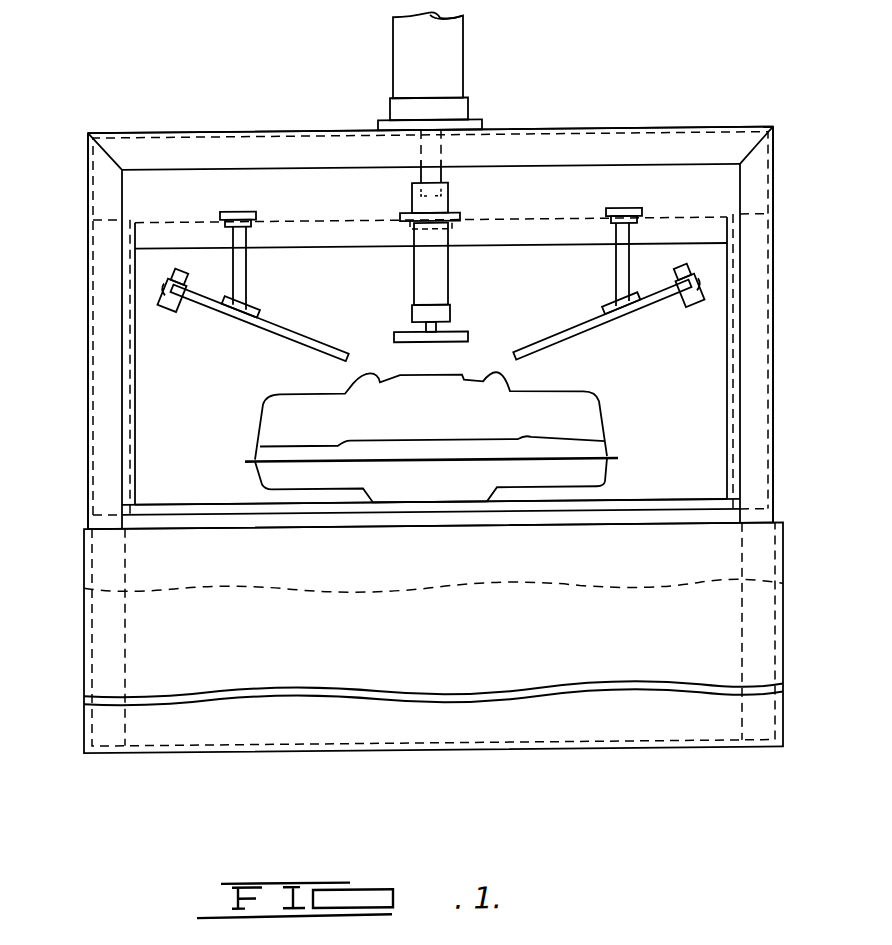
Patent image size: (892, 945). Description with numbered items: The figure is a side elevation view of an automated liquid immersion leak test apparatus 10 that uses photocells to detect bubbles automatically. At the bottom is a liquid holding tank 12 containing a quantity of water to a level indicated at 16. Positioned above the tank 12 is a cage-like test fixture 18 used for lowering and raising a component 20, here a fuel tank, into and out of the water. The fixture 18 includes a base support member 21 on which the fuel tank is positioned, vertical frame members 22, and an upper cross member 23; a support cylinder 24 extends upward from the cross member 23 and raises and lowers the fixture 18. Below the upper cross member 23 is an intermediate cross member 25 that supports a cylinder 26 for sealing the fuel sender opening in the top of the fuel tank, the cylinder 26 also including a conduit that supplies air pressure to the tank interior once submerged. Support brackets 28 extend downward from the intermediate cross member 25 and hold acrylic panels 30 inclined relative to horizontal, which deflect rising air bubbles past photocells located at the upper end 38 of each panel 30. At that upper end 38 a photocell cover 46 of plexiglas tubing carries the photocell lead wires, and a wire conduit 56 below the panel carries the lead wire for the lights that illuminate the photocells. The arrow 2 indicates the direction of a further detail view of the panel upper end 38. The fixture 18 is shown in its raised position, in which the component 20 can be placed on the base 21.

The arrow 2 is at (706, 289).
The automated liquid immersion leak test apparatus 10 is at (727, 108).
The liquid holding tank 12 is at (95, 636).
The water level 16 is at (466, 596).
The test fixture 18 is at (78, 392).
The component 20 is at (268, 420).
The base support member 21 is at (662, 505).
The vertical frame members 22 is at (100, 262).
The upper cross member 23 is at (247, 132).
The support cylinder 24 is at (455, 50).
The intermediate cross member 25 is at (510, 236).
The cylinder 26 is at (440, 273).
The support brackets 28 is at (248, 292).
The acrylic panels 30 is at (268, 345).
The upper end 38 is at (163, 295).
The photocell cover 46 is at (183, 289).
The wire conduit 56 is at (168, 309).